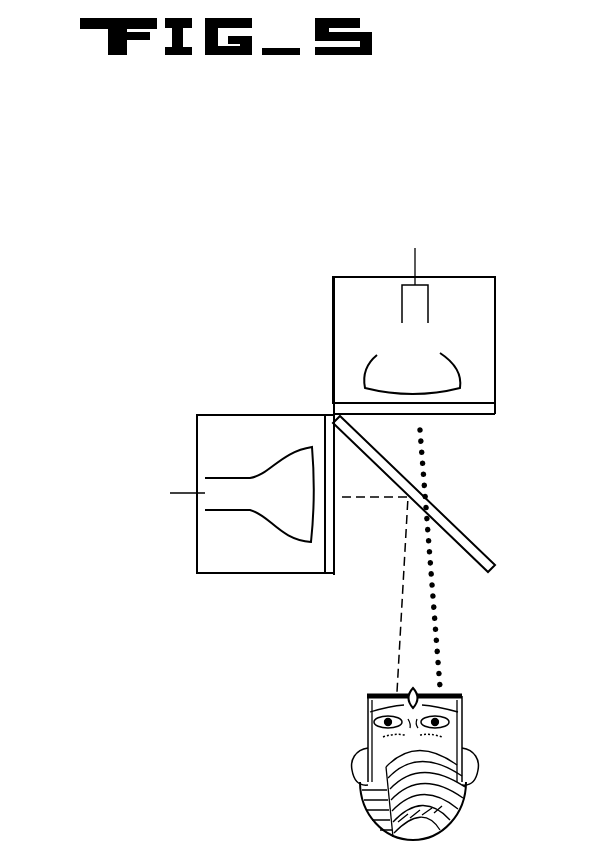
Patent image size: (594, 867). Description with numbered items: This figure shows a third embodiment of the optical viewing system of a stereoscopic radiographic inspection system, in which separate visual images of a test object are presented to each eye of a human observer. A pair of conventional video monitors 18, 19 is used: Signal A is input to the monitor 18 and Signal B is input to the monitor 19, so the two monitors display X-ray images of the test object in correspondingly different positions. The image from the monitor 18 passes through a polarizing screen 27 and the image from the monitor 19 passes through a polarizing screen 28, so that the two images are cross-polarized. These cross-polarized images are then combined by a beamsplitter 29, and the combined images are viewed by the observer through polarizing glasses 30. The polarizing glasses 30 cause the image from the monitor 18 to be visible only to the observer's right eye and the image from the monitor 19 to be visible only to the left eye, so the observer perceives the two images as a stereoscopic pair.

The video monitor 18 is at (463, 372).
The video monitor 19 is at (282, 451).
The polarizing screen 27 is at (450, 417).
The polarizing screen 28 is at (332, 575).
The beamsplitter 29 is at (472, 538).
The polarizing glasses 30 is at (455, 695).